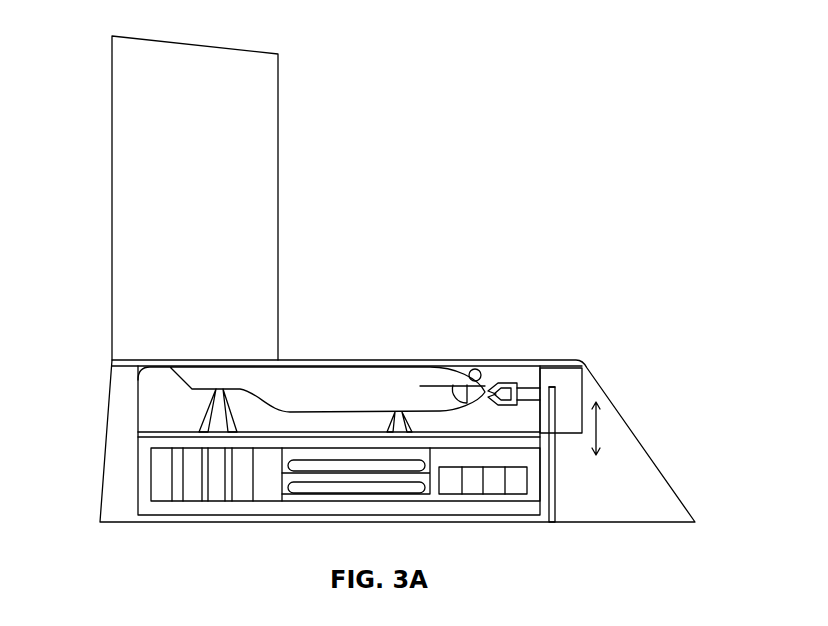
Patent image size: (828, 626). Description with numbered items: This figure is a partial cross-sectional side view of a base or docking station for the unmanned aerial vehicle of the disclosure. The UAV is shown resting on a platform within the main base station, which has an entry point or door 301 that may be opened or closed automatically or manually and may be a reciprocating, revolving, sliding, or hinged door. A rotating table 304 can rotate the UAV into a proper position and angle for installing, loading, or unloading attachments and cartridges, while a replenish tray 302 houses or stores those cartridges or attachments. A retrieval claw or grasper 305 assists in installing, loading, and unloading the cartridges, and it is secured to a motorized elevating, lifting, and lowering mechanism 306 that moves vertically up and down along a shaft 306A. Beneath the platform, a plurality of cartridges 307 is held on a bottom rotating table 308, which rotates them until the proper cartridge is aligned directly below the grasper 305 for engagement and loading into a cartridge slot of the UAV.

The entry point or door 301 is at (122, 291).
The replenish tray 302 is at (656, 458).
The rotating table 304 is at (138, 432).
The retrieval claw or grasper 305 is at (503, 382).
The motorized elevating, lifting, and lowering mechanism 306 is at (560, 386).
The shaft 306A is at (552, 412).
The cartridges 307 is at (151, 490).
The bottom rotating table 308 is at (555, 481).